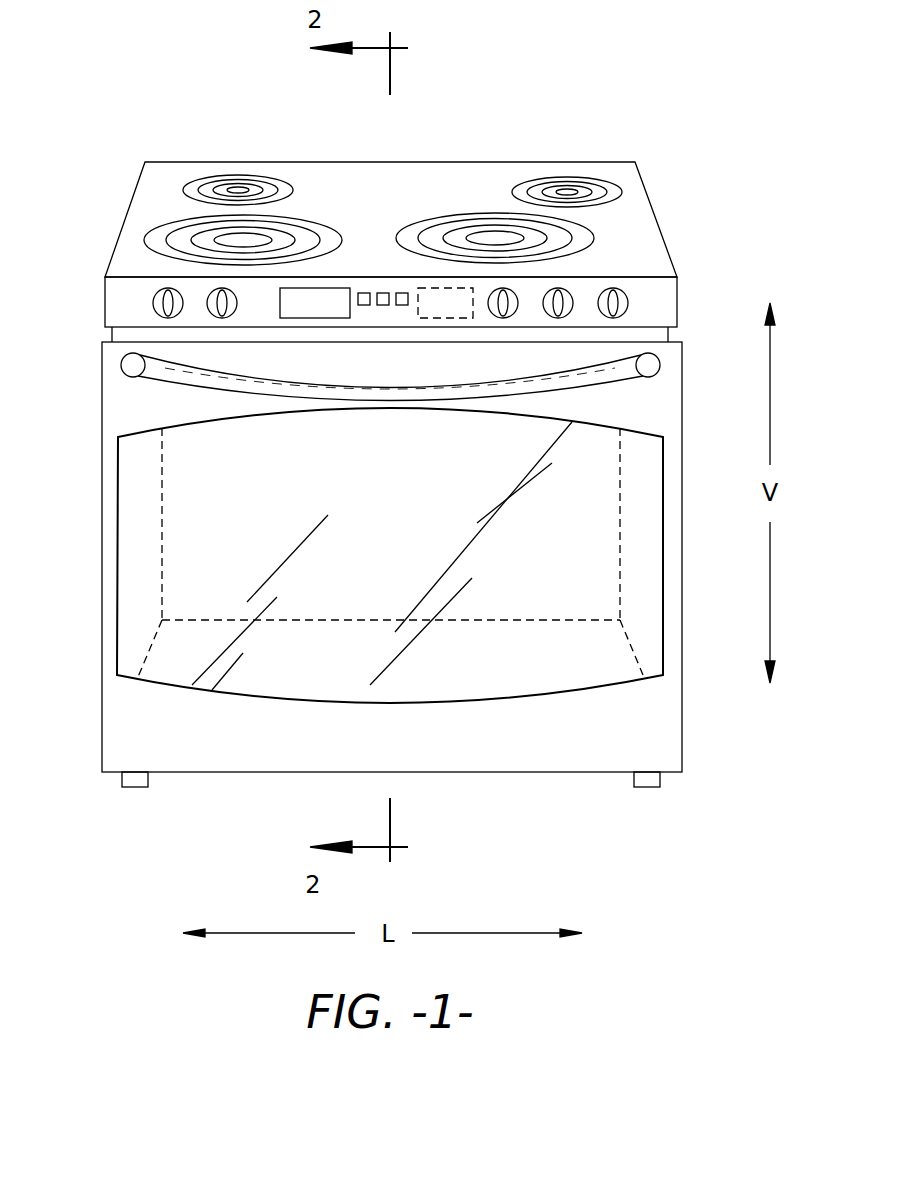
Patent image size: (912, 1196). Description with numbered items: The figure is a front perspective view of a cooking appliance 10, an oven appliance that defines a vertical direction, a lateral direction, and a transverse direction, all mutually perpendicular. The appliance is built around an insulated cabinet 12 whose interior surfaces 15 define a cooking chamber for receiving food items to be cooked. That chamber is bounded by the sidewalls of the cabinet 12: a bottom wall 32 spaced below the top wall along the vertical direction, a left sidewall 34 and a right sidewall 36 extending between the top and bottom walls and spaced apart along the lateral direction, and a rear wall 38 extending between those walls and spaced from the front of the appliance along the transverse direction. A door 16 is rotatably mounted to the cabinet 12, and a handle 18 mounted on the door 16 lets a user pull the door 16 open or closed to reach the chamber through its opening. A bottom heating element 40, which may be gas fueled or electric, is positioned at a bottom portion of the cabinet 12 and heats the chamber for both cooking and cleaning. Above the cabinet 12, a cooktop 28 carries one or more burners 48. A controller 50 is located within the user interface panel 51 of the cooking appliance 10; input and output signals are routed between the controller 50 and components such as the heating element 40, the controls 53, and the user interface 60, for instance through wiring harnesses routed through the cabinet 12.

The cooking appliance 10 is at (397, 452).
The insulated cabinet 12 is at (120, 333).
The interior surfaces 15 is at (176, 647).
The door 16 is at (665, 357).
The handle 18 is at (165, 382).
The cooktop 28 is at (186, 154).
The bottom wall 32 is at (488, 680).
The left sidewall 34 is at (137, 507).
The right sidewall 36 is at (640, 582).
The rear wall 38 is at (592, 490).
The bottom heating element 40 is at (248, 230).
The burners 48 is at (185, 192).
The controller 50 is at (445, 288).
The user interface panel 51 is at (386, 318).
The controls 53 is at (617, 290).
The user interface 60 is at (320, 288).